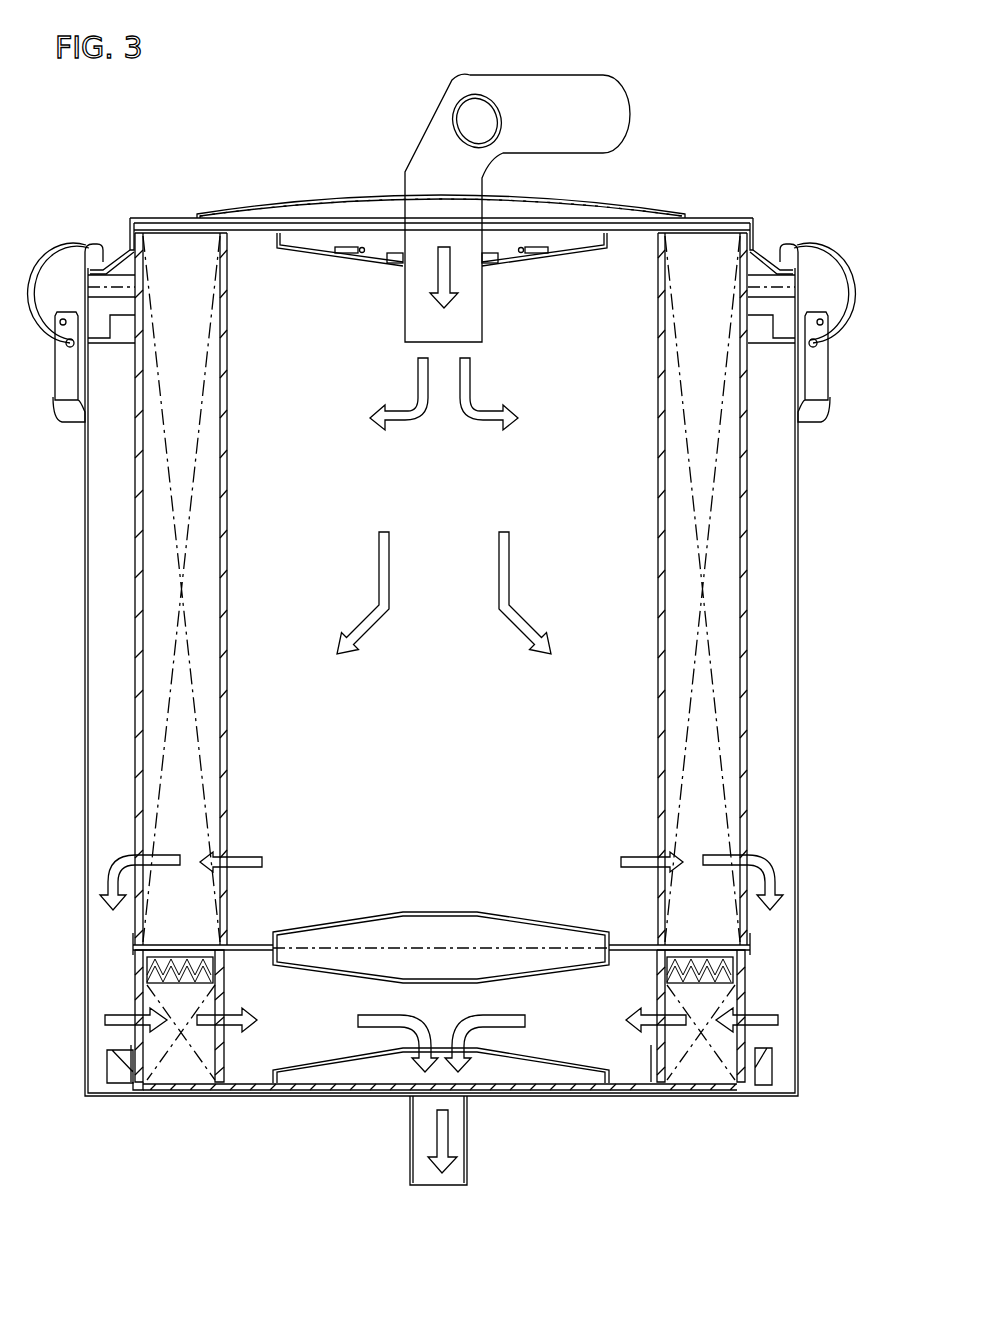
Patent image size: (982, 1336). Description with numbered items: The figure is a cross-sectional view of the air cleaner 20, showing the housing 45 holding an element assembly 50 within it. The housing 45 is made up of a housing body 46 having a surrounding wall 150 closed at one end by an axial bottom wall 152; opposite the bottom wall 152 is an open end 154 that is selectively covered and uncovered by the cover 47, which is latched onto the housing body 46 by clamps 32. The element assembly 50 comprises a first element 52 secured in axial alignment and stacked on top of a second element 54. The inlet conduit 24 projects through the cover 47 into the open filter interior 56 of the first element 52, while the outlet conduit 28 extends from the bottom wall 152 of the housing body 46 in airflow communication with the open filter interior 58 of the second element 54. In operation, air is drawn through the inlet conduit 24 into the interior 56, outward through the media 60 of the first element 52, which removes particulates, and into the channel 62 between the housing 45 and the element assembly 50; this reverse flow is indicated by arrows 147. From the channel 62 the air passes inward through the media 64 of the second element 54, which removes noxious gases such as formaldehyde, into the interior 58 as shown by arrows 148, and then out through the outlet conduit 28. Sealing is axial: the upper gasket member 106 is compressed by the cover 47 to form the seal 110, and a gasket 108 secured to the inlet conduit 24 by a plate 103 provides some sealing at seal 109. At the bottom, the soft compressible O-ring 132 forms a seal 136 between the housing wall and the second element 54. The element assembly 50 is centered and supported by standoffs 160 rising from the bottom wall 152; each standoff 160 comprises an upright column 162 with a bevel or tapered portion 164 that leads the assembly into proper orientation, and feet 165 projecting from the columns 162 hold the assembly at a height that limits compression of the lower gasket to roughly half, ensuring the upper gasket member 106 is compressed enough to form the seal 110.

The air cleaner 20 is at (380, 128).
The inlet conduit 24 is at (540, 88).
The outlet conduit 28 is at (468, 1170).
The clamps 32 is at (37, 297).
The housing 45 is at (800, 688).
The housing body 46 is at (798, 512).
The cover 47 is at (347, 197).
The element assembly 50 is at (100, 501).
The first element 52 is at (125, 554).
The second element 54 is at (124, 994).
The open filter interior 56 is at (640, 495).
The open filter interior 58 is at (657, 1042).
The media 60 is at (705, 708).
The channel 62 is at (96, 698).
The media 64 is at (723, 1002).
The plate 103 is at (490, 255).
The gasket member 106 is at (178, 228).
The gasket 108 is at (497, 260).
The seal 109 is at (393, 262).
The seal 110 is at (172, 228).
The O-ring 132 is at (712, 1088).
The seal 136 is at (170, 1088).
The arrows 147 is at (455, 270).
The arrows 148 is at (230, 1013).
The surrounding wall 150 is at (87, 622).
The bottom wall 152 is at (307, 1095).
The open end 154 is at (722, 233).
The standoffs 160 is at (773, 1065).
The columns 162 is at (110, 1068).
The tapered portion 164 is at (133, 1053).
The feet 165 is at (137, 1085).